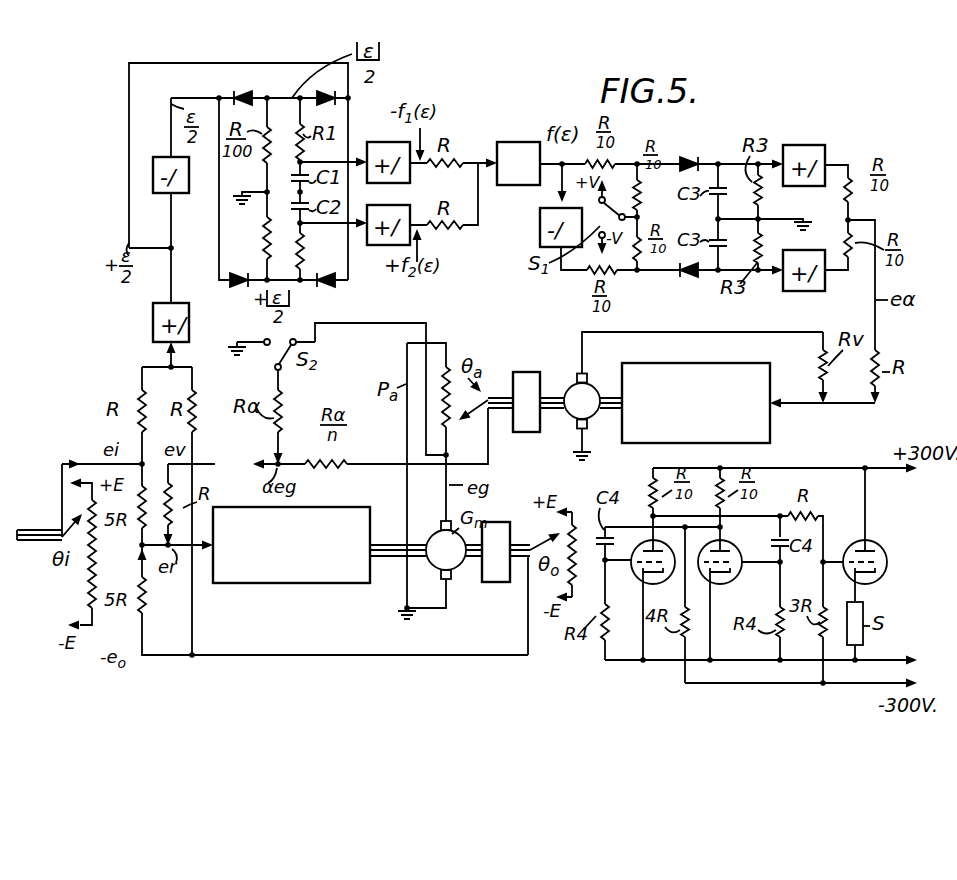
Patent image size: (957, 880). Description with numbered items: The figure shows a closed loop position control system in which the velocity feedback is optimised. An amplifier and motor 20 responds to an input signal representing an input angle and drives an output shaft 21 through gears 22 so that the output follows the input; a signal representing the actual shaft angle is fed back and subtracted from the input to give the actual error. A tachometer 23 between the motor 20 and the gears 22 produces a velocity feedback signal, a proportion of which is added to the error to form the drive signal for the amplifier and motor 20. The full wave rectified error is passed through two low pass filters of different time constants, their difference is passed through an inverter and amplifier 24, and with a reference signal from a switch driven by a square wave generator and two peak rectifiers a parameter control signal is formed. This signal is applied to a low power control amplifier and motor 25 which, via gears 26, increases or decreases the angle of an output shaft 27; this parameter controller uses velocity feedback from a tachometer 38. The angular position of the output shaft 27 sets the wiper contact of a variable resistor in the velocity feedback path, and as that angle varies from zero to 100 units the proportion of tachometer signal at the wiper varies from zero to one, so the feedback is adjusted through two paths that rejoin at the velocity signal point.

The amplifier and motor 20 is at (290, 575).
The output shaft 21 is at (548, 582).
The gears 22 is at (495, 583).
The tachometer 23 is at (431, 528).
The inverter and amplifier 24 is at (514, 150).
The control amplifier and motor 25 is at (695, 378).
The gears 26 is at (534, 379).
The output shaft 27 is at (490, 398).
The tachometer 38 is at (592, 386).
The potentiometer 100 is at (447, 475).